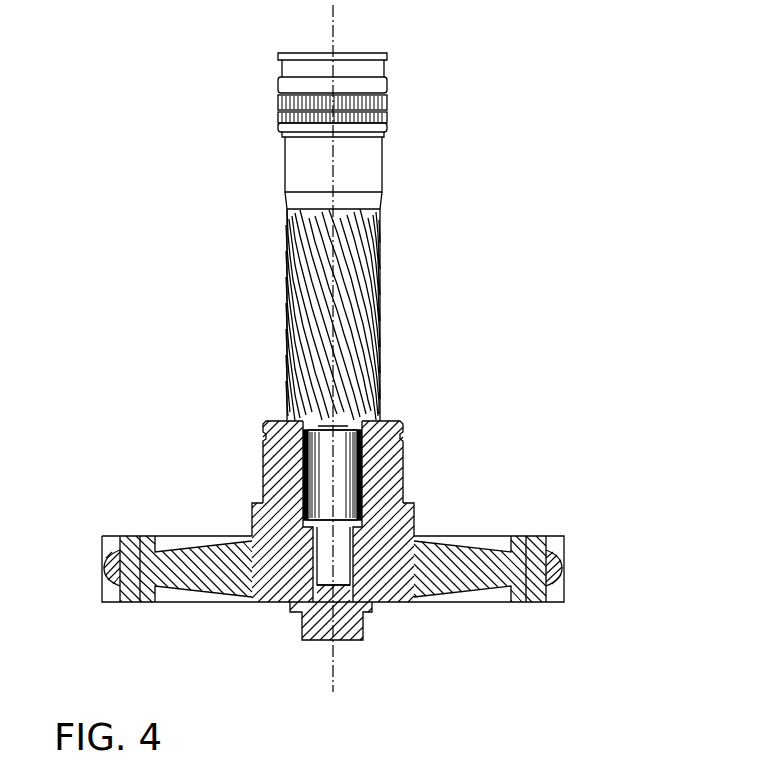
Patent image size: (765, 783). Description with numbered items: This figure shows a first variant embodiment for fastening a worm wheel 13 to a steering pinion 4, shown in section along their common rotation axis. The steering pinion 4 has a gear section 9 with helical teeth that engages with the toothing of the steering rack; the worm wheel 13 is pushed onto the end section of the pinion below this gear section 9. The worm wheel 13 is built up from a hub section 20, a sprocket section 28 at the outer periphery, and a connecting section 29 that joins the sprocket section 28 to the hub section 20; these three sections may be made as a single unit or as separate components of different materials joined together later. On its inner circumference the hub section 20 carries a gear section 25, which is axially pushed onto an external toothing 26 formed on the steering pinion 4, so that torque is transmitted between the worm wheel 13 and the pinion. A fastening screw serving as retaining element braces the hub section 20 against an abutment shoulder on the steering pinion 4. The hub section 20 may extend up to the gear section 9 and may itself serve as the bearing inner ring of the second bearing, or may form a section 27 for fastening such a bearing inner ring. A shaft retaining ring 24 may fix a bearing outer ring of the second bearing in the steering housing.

The steering pinion 4 is at (361, 229).
The gear section 9 is at (357, 336).
The worm wheel 13 is at (467, 575).
The hub section 20 is at (384, 513).
The shaft retaining ring 24 is at (318, 628).
The gear section 25 is at (402, 447).
The external toothing 26 is at (323, 460).
The section for fastening a bearing inner ring 27 is at (403, 463).
The sprocket section 28 is at (124, 572).
The connecting section 29 is at (208, 572).